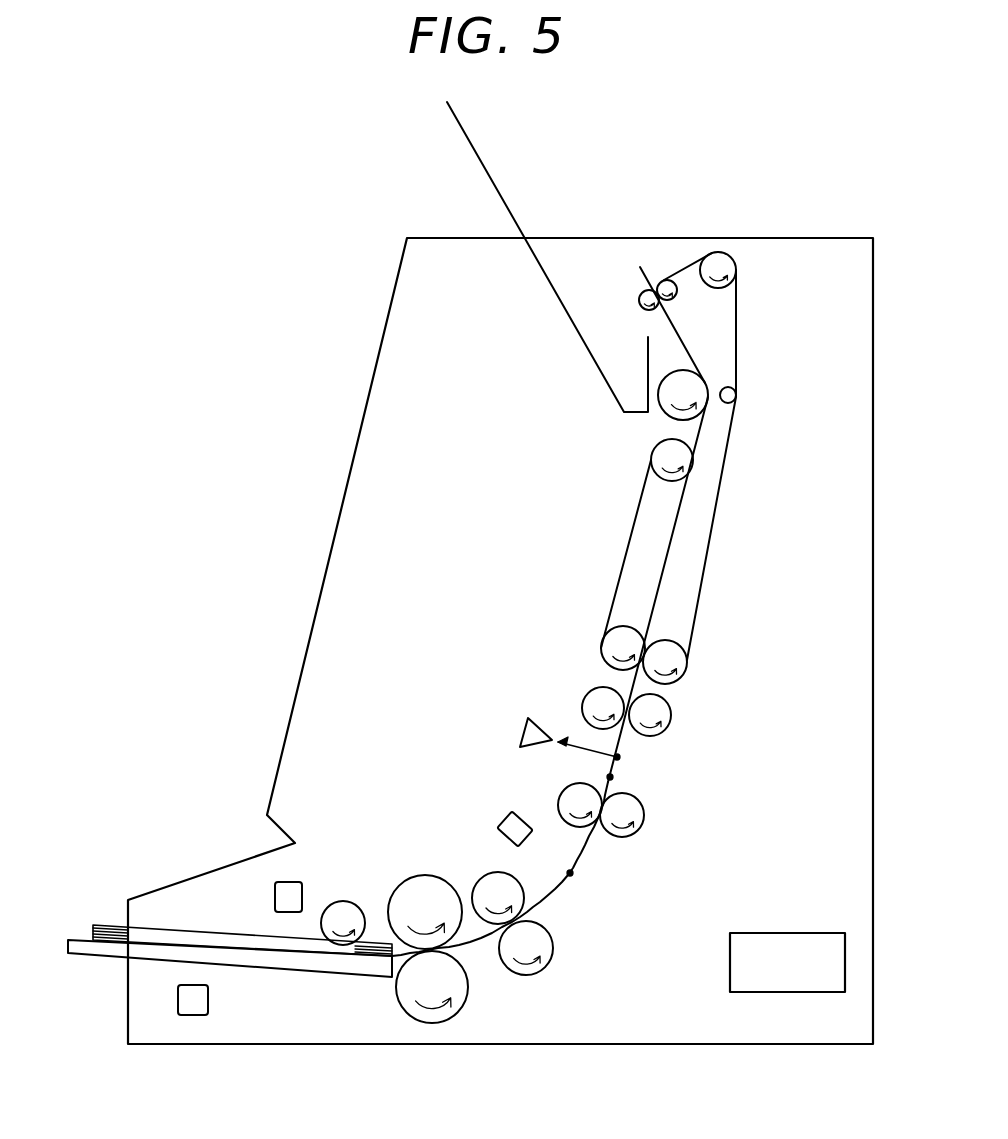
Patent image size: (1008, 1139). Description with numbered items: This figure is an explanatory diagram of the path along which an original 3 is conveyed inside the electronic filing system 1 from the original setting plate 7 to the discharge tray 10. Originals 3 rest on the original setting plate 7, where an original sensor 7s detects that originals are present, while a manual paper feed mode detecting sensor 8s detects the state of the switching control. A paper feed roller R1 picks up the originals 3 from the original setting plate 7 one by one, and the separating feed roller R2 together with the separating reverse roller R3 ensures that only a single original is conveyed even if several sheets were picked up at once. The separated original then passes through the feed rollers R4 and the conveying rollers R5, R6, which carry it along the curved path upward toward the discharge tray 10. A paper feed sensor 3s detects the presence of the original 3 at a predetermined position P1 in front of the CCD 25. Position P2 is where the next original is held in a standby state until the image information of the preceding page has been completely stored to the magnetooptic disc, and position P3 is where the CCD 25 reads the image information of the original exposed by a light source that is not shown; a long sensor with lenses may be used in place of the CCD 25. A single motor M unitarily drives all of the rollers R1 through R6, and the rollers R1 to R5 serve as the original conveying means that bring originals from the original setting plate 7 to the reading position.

The electronic filing system 1 is at (835, 238).
The discharge tray 10 is at (482, 157).
The original 3 is at (643, 268).
The paper feed sensor 3s is at (507, 815).
The original setting plate 7 is at (103, 955).
The original sensor 7s is at (298, 882).
The manual paper feed mode detecting sensor 8s is at (203, 1015).
The paper feed roller R1 is at (345, 901).
The separating feed roller R2 is at (458, 925).
The separating reverse roller R3 is at (437, 1023).
The feed rollers R4 is at (552, 947).
The conveying rollers R5 is at (630, 833).
The conveying rollers R6 is at (670, 712).
The predetermined position P1 is at (570, 873).
The standby position P2 is at (610, 777).
The reading position P3 is at (617, 757).
The CCD 25 is at (528, 718).
The motor M is at (818, 933).